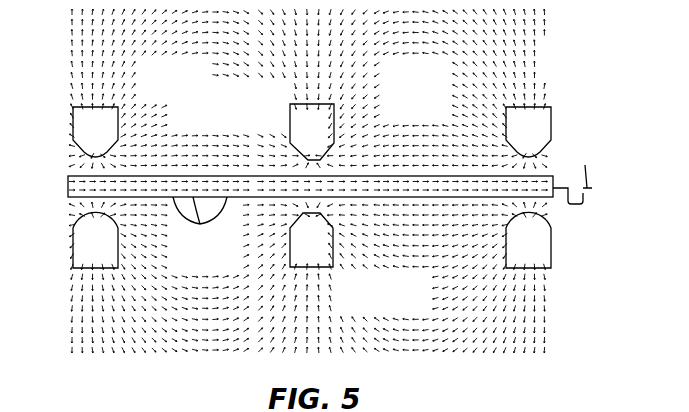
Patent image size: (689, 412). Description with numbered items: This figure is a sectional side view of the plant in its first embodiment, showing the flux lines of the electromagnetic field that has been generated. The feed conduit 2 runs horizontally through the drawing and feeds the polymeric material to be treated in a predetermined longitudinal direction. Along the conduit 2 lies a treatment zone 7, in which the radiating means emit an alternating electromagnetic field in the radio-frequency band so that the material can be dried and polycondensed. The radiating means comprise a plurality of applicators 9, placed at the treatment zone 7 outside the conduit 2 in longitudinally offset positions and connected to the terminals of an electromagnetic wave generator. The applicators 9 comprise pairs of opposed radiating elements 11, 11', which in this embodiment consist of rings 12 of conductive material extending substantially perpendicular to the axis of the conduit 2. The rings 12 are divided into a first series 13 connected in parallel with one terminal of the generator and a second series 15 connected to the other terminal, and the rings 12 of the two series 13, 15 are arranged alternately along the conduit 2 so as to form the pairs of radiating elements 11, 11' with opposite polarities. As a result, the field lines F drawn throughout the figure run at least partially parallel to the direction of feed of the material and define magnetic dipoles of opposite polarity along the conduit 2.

The feed conduit 2 is at (68, 189).
The treatment zone 7 is at (536, 80).
The applicator 9 is at (58, 103).
The radiating element 11 is at (134, 110).
The radiating element 11' is at (420, 101).
The ring 12 is at (290, 125).
The first series of rings 13 is at (75, 255).
The second series of rings 15 is at (322, 255).
The field lines F is at (200, 226).